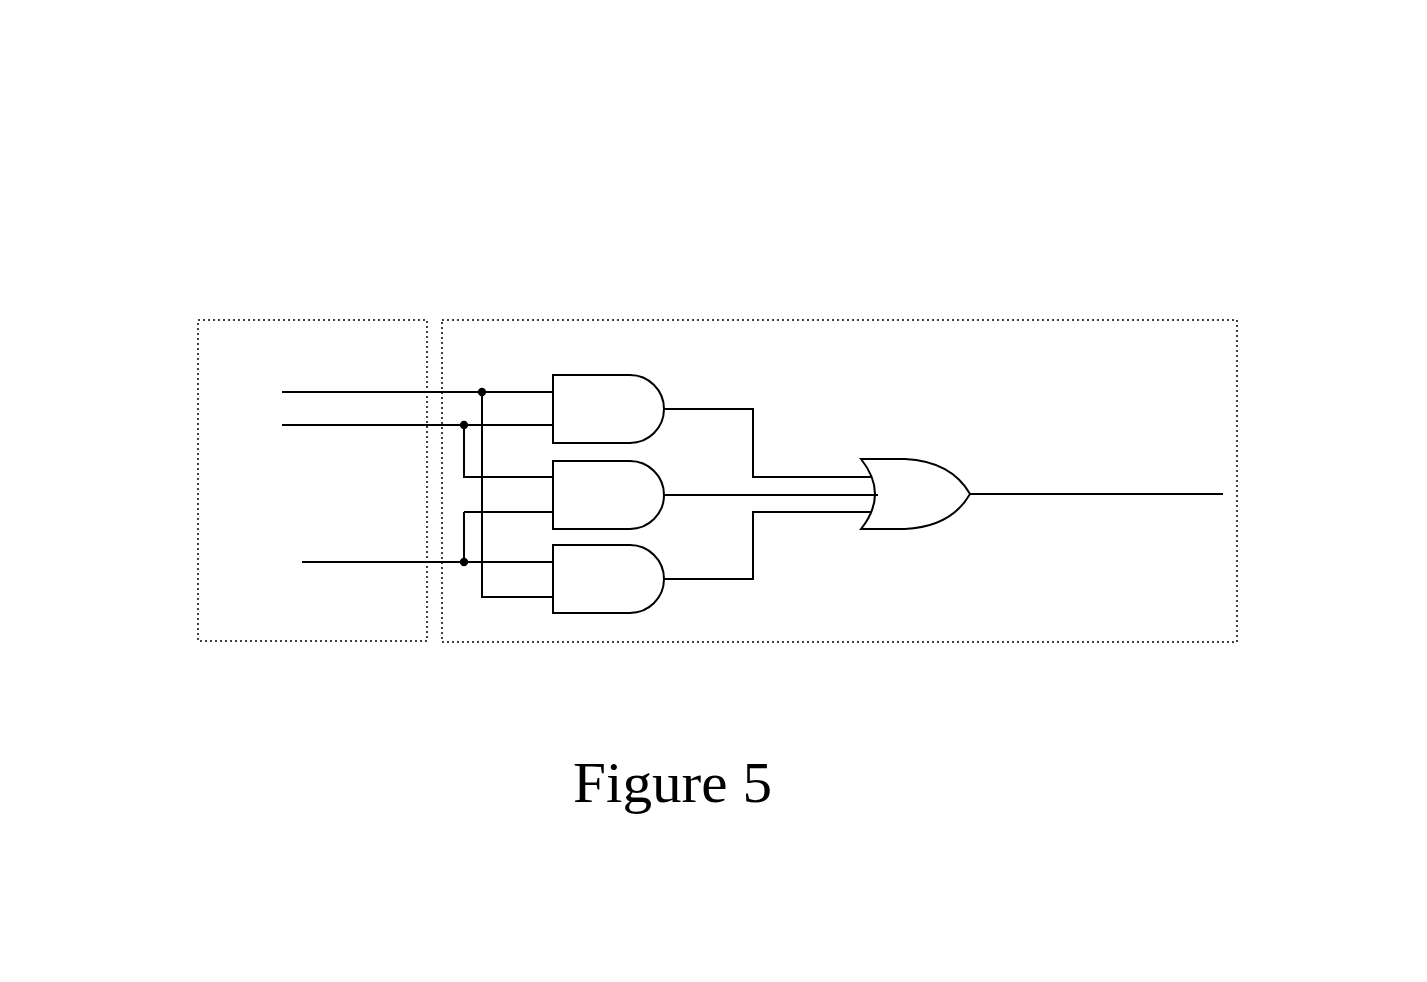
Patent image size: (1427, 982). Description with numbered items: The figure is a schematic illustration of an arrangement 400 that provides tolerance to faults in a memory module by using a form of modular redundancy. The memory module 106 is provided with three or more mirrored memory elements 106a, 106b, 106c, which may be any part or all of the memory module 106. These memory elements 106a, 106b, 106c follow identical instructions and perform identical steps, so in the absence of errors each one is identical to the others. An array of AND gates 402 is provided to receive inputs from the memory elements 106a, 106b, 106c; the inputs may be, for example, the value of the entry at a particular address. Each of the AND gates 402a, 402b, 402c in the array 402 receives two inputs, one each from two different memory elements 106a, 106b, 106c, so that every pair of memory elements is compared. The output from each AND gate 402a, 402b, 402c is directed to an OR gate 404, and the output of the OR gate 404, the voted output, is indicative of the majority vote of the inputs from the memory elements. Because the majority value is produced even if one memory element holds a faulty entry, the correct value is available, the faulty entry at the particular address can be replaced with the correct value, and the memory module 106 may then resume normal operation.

The fault-tolerant memory arrangement 400 is at (1190, 237).
The memory module 106 is at (244, 320).
The memory element 106a is at (276, 378).
The memory element 106b is at (276, 413).
The memory element 106c is at (268, 555).
The array of AND gates 402 is at (621, 357).
The AND gate 402a is at (655, 380).
The AND gate 402b is at (652, 474).
The AND gate 402c is at (660, 598).
The OR gate 404 is at (910, 461).